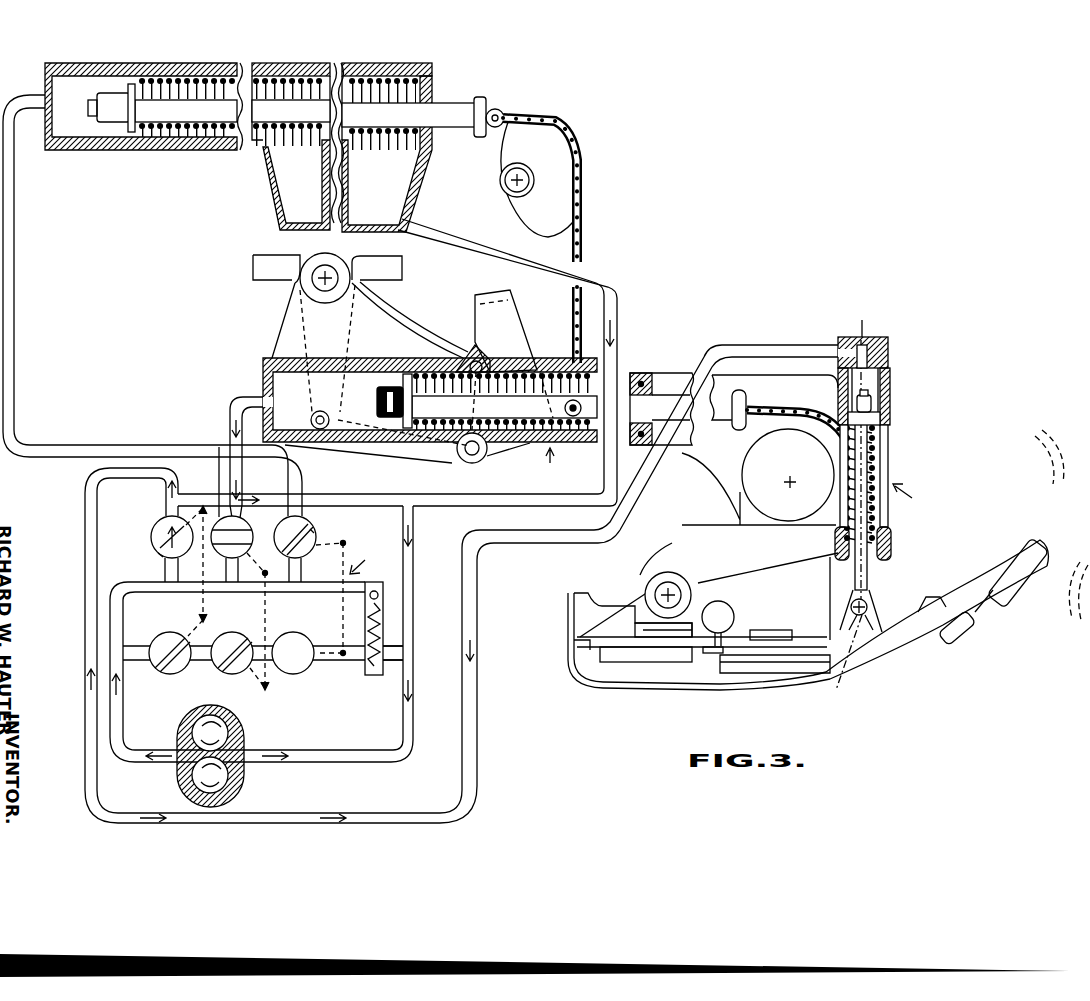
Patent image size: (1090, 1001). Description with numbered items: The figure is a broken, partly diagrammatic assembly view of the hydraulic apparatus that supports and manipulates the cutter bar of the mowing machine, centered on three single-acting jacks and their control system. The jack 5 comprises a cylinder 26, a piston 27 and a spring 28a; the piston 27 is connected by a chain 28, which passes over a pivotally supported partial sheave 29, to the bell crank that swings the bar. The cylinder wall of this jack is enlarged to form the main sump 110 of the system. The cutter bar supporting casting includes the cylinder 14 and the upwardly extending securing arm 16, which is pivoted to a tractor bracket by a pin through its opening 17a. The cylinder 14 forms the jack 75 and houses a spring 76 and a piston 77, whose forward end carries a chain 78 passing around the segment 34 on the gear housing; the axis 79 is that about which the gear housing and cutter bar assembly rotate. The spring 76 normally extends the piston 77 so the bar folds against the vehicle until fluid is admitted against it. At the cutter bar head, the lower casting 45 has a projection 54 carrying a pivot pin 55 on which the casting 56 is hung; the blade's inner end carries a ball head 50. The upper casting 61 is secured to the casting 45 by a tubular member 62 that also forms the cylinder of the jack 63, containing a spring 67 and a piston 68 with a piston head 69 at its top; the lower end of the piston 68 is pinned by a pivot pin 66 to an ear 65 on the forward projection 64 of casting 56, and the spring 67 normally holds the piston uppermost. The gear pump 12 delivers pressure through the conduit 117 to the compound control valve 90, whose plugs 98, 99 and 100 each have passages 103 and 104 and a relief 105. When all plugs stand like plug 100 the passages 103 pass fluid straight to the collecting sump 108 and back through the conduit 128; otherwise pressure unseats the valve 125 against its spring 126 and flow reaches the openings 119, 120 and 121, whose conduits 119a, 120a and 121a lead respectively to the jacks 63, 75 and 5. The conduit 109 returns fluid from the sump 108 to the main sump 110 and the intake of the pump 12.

The jack 5 is at (192, 163).
The cylinder 26 is at (138, 150).
The main sump 110 is at (276, 197).
The spring 28a is at (378, 143).
The piston 27 is at (465, 106).
The partial sheave 29 is at (540, 193).
The chain 28 is at (586, 228).
The opening 17a is at (385, 271).
The securing arm 16 is at (392, 328).
The spring 76 is at (561, 368).
The cylinder 14 is at (533, 445).
The jack 75 is at (556, 465).
The piston 77 is at (659, 405).
The chain 78 is at (795, 412).
The segment 34 is at (781, 472).
The axis 79 is at (793, 480).
The projection 54 is at (678, 557).
The casting 56 is at (636, 612).
The pivot pin 55 is at (681, 598).
The ball head 50 is at (732, 620).
The tubular member 62 is at (886, 448).
The piston 68 is at (855, 574).
The upper casting 61 is at (892, 388).
The spring 67 is at (885, 472).
The piston head 69 is at (880, 414).
The jack 63 is at (915, 498).
The lower casting 45 is at (894, 544).
The ear 65 is at (875, 612).
The pivot pin 66 is at (851, 607).
The projection 64 is at (886, 638).
The conduit 121a is at (14, 320).
The opening 121 is at (302, 476).
The conduit 120a is at (228, 408).
The opening 120 is at (244, 492).
The relief 105 is at (287, 525).
The conduit 119a is at (312, 813).
The opening 119 is at (181, 494).
The conduit 109 is at (617, 300).
The conduit 128 is at (413, 758).
The conduit 117 is at (115, 706).
The passage 103 is at (167, 658).
The plug 98 is at (160, 520).
The plug 99 is at (240, 632).
The plug 100 is at (314, 546).
The passage 104 is at (160, 555).
The compound control valve 90 is at (371, 557).
The valve 125 is at (380, 608).
The spring 126 is at (381, 634).
The collecting sump 108 is at (370, 658).
The gear pump 12 is at (242, 730).